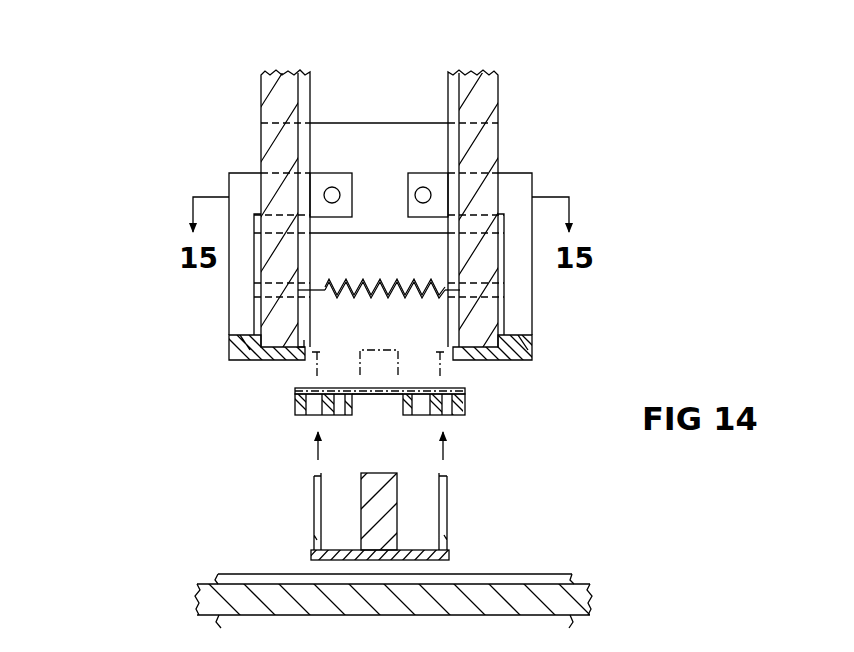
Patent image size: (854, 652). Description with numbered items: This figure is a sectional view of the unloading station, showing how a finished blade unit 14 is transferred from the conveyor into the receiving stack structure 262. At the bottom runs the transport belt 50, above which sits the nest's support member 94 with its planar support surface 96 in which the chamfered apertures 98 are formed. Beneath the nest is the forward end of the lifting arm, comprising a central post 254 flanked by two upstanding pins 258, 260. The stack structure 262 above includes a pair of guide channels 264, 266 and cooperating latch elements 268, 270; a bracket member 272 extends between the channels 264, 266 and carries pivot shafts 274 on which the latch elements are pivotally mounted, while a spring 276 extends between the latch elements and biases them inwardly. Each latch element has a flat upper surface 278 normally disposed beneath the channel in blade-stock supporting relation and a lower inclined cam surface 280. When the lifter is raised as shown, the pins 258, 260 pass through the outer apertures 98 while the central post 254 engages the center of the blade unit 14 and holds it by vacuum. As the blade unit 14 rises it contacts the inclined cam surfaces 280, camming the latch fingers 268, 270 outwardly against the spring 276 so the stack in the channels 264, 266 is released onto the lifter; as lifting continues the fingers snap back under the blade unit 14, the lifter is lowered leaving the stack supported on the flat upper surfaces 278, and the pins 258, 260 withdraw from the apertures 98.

The blade unit 14 is at (394, 387).
The transport belt 50 is at (205, 603).
The support member 94 is at (295, 405).
The support surface 96 is at (405, 405).
The apertures 98 is at (450, 413).
The central post 254 is at (398, 483).
The upstanding pin 258 is at (314, 496).
The upstanding pin 260 is at (447, 496).
The receiving stack structure 262 is at (553, 118).
The guide channel 264 is at (261, 106).
The guide channel 266 is at (498, 112).
The latch element 268 is at (232, 357).
The latch element 270 is at (512, 358).
The bracket member 272 is at (380, 123).
The pivot shafts 274 is at (418, 190).
The spring 276 is at (376, 283).
The flat upper surface 278 is at (308, 347).
The inclined cam surface 280 is at (305, 362).